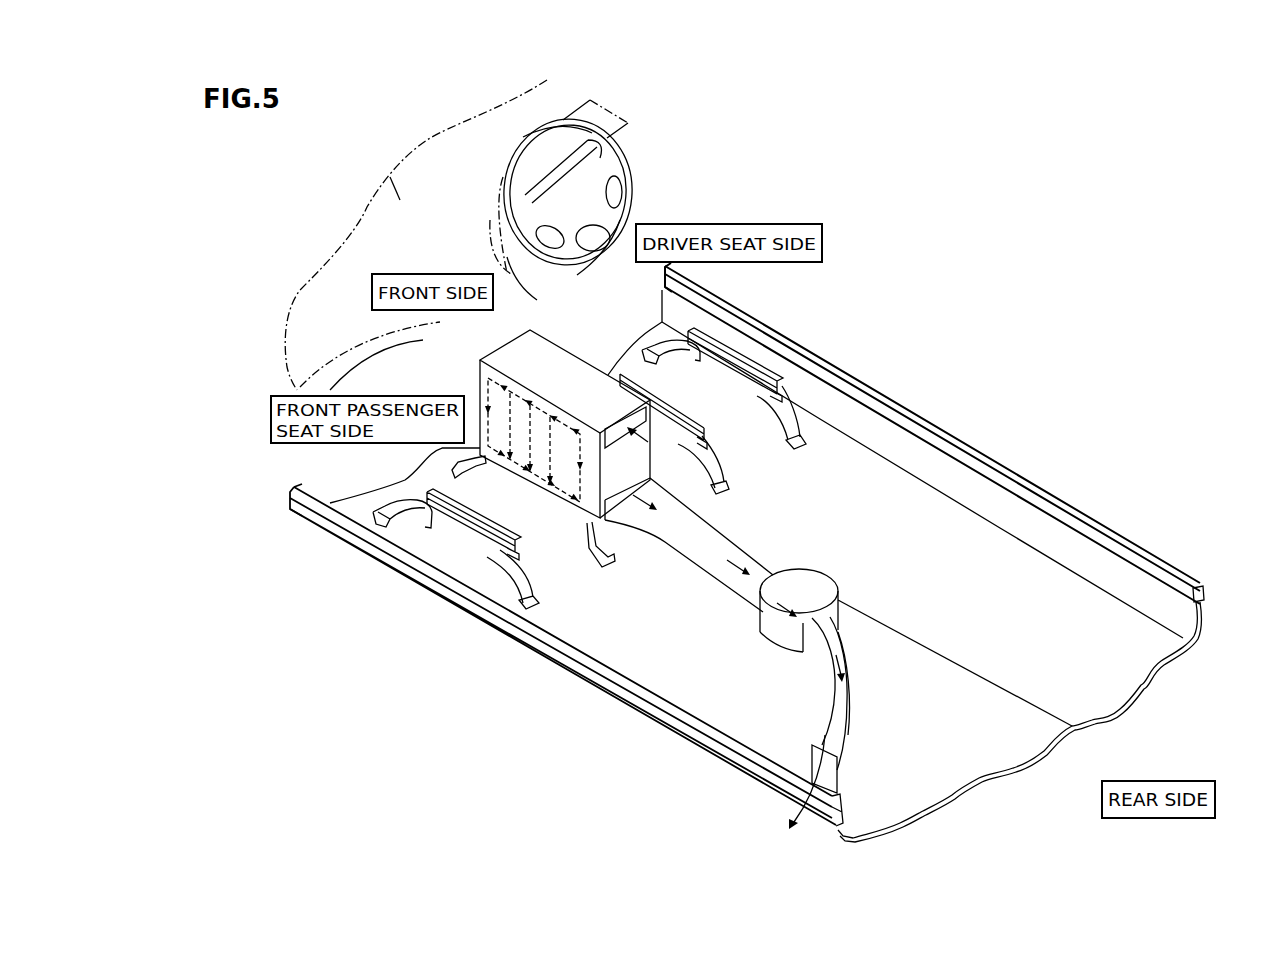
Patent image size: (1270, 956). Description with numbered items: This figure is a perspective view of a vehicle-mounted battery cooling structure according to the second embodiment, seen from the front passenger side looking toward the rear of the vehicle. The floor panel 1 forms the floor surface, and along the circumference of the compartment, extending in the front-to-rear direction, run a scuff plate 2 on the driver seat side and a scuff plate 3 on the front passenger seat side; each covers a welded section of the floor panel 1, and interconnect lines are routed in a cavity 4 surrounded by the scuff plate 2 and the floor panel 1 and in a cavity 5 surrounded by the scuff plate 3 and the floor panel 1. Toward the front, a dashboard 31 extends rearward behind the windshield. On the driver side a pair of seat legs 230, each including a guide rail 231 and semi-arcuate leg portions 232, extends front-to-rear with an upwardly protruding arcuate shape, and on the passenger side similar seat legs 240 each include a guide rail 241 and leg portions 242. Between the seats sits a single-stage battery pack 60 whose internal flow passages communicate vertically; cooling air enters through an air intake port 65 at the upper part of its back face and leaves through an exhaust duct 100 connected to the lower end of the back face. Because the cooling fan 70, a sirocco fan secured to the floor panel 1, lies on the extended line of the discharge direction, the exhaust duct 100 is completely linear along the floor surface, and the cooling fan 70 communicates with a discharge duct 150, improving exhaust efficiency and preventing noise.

The floor panel 1 is at (984, 747).
The scuff plate 2 is at (1093, 525).
The scuff plate 3 is at (575, 653).
The cavity 4 is at (1203, 593).
The cavity 5 is at (842, 818).
The dashboard 31 is at (381, 172).
The battery pack 60 is at (472, 388).
The air intake port 65 is at (616, 440).
The cooling fan 70 is at (1065, 723).
The exhaust duct 100 is at (708, 550).
The discharge duct 150 is at (822, 723).
The seat legs 230 is at (744, 385).
The guide rail 231 is at (767, 377).
The leg portions 232 is at (793, 413).
The seat legs 240 is at (456, 604).
The guide rail 241 is at (480, 540).
The leg portions 242 is at (517, 593).